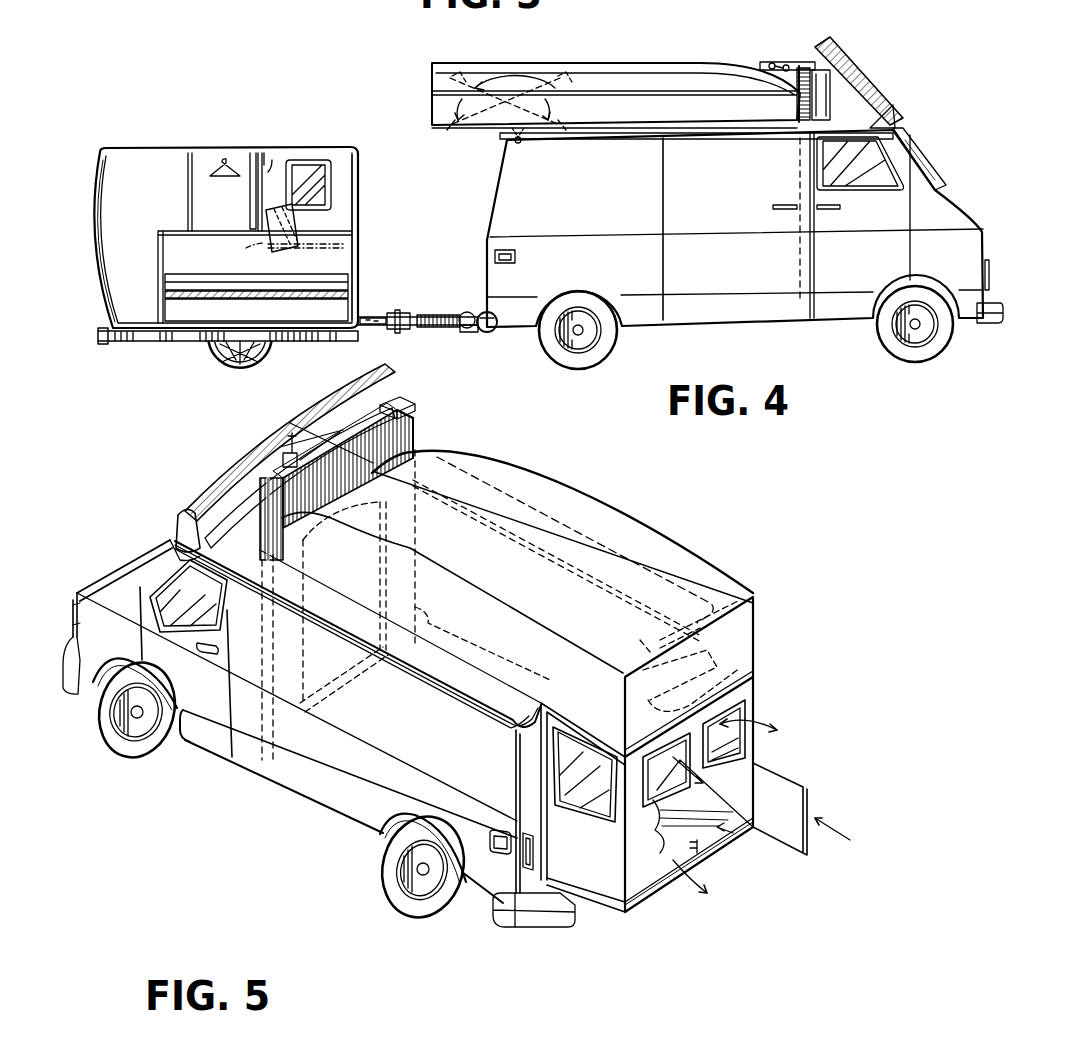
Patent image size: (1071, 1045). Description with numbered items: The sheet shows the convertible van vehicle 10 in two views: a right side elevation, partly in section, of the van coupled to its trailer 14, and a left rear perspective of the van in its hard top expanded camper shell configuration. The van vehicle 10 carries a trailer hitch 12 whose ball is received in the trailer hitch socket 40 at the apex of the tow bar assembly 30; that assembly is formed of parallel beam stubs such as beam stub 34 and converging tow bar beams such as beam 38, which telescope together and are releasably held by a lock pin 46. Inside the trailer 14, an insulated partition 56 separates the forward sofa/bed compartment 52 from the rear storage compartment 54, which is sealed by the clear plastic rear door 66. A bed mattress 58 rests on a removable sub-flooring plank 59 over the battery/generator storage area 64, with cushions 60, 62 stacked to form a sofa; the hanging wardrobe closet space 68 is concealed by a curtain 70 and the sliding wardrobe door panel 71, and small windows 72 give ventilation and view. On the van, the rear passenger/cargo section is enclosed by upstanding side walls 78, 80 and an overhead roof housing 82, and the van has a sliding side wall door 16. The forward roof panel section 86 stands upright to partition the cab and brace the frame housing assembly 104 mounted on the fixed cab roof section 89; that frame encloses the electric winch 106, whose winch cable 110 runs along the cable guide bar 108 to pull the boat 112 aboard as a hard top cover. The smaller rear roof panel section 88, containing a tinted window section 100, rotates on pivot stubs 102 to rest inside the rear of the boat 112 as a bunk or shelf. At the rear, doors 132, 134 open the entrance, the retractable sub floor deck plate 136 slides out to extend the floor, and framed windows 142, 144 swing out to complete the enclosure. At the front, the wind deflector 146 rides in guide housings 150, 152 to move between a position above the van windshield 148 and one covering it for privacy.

In FIG. 4, the van vehicle 10 is at (908, 82).
In FIG. 5, the van vehicle 10 is at (222, 792).
In FIG. 4, the trailer hitch 12 is at (468, 337).
In FIG. 4, the trailer 14 is at (320, 126).
In FIG. 4, the side wall door 16 is at (670, 168).
In FIG. 4, the tow bar assembly 30 is at (434, 295).
In FIG. 4, the beam stub 34 is at (380, 328).
In FIG. 4, the converging tow bar beam 38 is at (450, 328).
In FIG. 4, the trailer hitch socket 40 is at (470, 312).
In FIG. 4, the lock pin 46 is at (397, 310).
In FIG. 4, the forward sofa/bed compartment 52 is at (345, 222).
In FIG. 4, the rear storage compartment 54 is at (147, 197).
In FIG. 4, the insulated partition 56 is at (158, 262).
In FIG. 4, the bed mattress 58 is at (246, 284).
In FIG. 4, the sub-flooring plank 59 is at (212, 300).
In FIG. 4, the cushion 60 is at (347, 244).
In FIG. 4, the cushion 62 is at (298, 232).
In FIG. 4, the battery/generator storage area 64 is at (335, 321).
In FIG. 4, the rear door 66 is at (93, 232).
In FIG. 4, the wardrobe closet space 68 is at (231, 211).
In FIG. 4, the curtain 70 is at (250, 162).
In FIG. 4, the wardrobe door panel 71 is at (268, 170).
In FIG. 4, the small window 72 is at (373, 228).
In FIG. 4, the side wall 78 is at (590, 224).
In FIG. 5, the side wall 80 is at (387, 742).
In FIG. 5, the overhead roof housing 82 is at (440, 664).
In FIG. 4, the forward roof panel section 86 is at (797, 116).
In FIG. 5, the forward roof panel section 86 is at (412, 430).
In FIG. 4, the rear roof panel section 88 is at (560, 82).
In FIG. 5, the rear roof panel section 88 is at (752, 632).
In FIG. 5, the cab roof section 89 is at (245, 520).
In FIG. 5, the tinted window section 100 is at (638, 648).
In FIG. 4, the pivot stub 102 is at (516, 143).
In FIG. 4, the frame housing assembly 104 is at (808, 55).
In FIG. 5, the frame housing assembly 104 is at (396, 403).
In FIG. 4, the electric winch 106 is at (856, 112).
In FIG. 5, the electric winch 106 is at (328, 468).
In FIG. 4, the cable guide bar 108 is at (797, 98).
In FIG. 5, the cable guide bar 108 is at (257, 442).
In FIG. 4, the winch cable 110 is at (790, 63).
In FIG. 5, the winch cable 110 is at (405, 448).
In FIG. 4, the boat 112 is at (517, 60).
In FIG. 5, the boat 112 is at (578, 498).
In FIG. 5, the rear door 132 is at (650, 890).
In FIG. 5, the rear door 134 is at (806, 780).
In FIG. 5, the sub floor deck plate 136 is at (715, 840).
In FIG. 5, the framed window 142 is at (618, 826).
In FIG. 5, the framed window 144 is at (758, 706).
In FIG. 4, the wind deflector 146 is at (848, 45).
In FIG. 5, the wind deflector 146 is at (264, 424).
In FIG. 4, the van windshield 148 is at (922, 166).
In FIG. 4, the guide housing 150 is at (896, 116).
In FIG. 5, the guide housing 152 is at (176, 528).